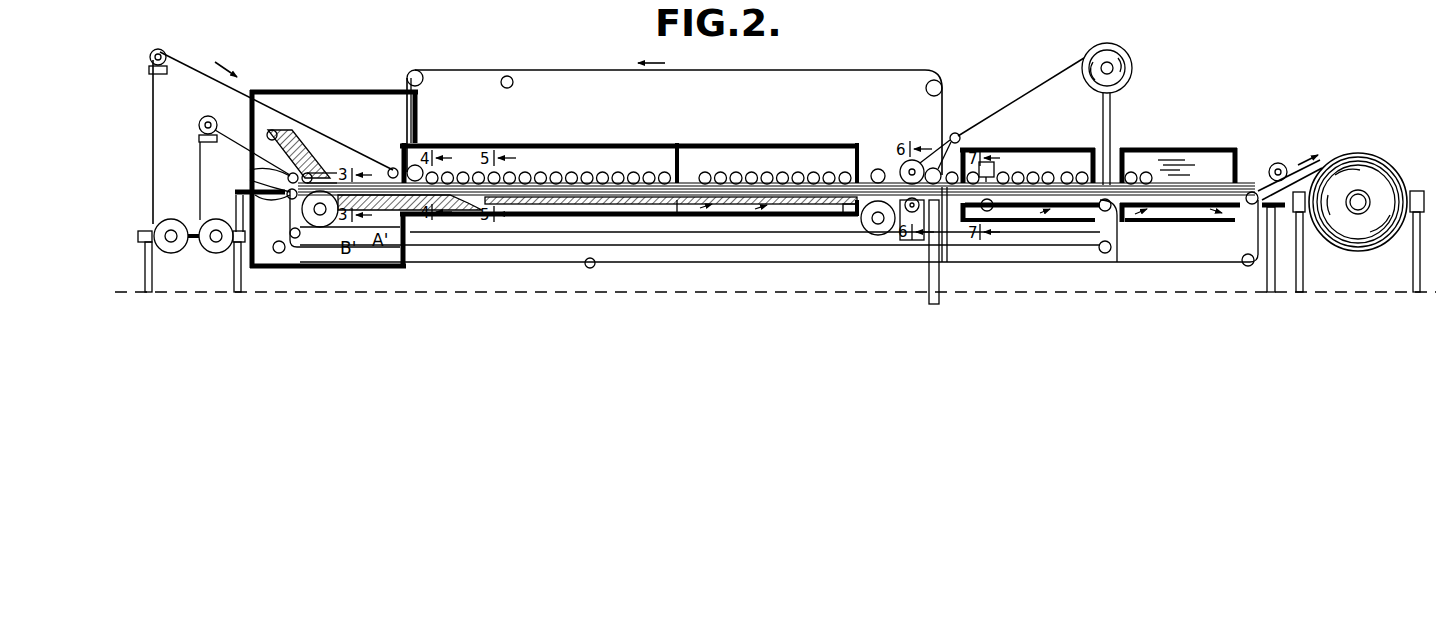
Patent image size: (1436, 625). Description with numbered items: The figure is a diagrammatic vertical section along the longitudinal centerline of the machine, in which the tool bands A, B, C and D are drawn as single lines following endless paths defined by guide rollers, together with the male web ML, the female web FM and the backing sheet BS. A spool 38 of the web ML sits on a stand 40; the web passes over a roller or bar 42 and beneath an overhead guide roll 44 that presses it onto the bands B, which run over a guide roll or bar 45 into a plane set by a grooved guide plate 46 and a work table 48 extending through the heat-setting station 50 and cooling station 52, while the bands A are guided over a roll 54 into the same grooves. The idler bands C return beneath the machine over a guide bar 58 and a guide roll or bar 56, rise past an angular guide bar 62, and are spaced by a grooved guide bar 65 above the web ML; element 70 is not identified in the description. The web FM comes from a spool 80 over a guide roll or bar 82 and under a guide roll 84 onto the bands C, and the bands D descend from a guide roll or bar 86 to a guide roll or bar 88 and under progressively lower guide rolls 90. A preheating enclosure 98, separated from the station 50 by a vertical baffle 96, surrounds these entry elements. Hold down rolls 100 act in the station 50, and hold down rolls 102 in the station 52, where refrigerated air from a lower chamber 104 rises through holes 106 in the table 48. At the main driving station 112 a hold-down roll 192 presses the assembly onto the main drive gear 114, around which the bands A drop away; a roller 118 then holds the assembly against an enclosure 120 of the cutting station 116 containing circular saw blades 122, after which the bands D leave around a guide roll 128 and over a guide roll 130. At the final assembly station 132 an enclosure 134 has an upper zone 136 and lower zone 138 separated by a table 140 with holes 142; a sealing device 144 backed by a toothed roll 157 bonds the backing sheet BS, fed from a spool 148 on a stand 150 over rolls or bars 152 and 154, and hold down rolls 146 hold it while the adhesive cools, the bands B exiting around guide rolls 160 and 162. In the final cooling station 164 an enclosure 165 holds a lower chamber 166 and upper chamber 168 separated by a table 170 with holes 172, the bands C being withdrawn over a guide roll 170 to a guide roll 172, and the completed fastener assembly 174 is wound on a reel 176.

The spool 38 is at (216, 219).
The stand 40 is at (234, 273).
The roller or bar 42 is at (203, 117).
The overhead guide roll 44 is at (260, 156).
The guide roll or bar 45 is at (258, 188).
The grooved guide plate 46 is at (385, 194).
The work table 48 is at (574, 205).
The assembly and heat-setting station 50 is at (577, 142).
The cooling station 52 is at (743, 142).
The roll 54 is at (320, 216).
The guide roll or bar 56 is at (278, 254).
The guide bar 58 is at (591, 269).
The guide roll or bar 62 is at (262, 124).
The guide bar 65 is at (335, 167).
The belt section 70 is at (465, 185).
The spool 80 is at (178, 252).
The guide roll or bar 82 is at (158, 49).
The guide roll 84 is at (390, 166).
The guide roll or bar 86 is at (416, 69).
The guide roll or bar 88 is at (418, 164).
The guide rolls 90 is at (462, 178).
The vertical baffle 96 is at (407, 143).
The enclosure 98 is at (323, 89).
The hold down rolls 100 is at (541, 172).
The hold down rolls 102 is at (689, 172).
The lower chamber 104 is at (784, 214).
The holes 106 is at (840, 214).
The main driving station 112 is at (881, 168).
The main drive gear 114 is at (880, 236).
The cutting station 116 is at (897, 165).
The roller 118 is at (917, 182).
The enclosure 120 is at (924, 242).
The circular saw blades 122 is at (905, 242).
The guide roll 128 is at (940, 170).
The guide roll 130 is at (936, 80).
The final assembly station 132 is at (1064, 146).
The enclosure 134 is at (1095, 152).
The upper zone 136 is at (1078, 160).
The lower zone 138 is at (1060, 209).
The table 140 is at (1048, 209).
The holes 142 is at (1068, 222).
The heating or sealing device 144 is at (1000, 168).
The hold down rolls 146 is at (983, 161).
The spool 148 is at (1110, 46).
The stand 150 is at (1110, 104).
The roll or bar 152 is at (960, 133).
The roll or bar 154 is at (955, 184).
The toothed roll 157 is at (995, 209).
The guide roll 160 is at (1105, 212).
The guide roll 162 is at (1108, 254).
The final cooling station 164 is at (1175, 147).
The enclosure 165 is at (1235, 150).
The lower chamber 166 is at (1172, 210).
The upper chamber 168 is at (1203, 162).
The table 170 is at (1253, 191).
The holes 172 is at (1247, 267).
The completed fastener assembly 174 is at (1291, 172).
The reel 176 is at (1366, 168).
The hold-down roll 192 is at (874, 170).
The tool bands A is at (636, 233).
The tool bands B is at (1118, 238).
The tool bands C is at (312, 146).
The tool bands D is at (573, 72).
The female web FM is at (195, 60).
The backing sheet BS is at (1020, 90).
The male web ML is at (202, 160).